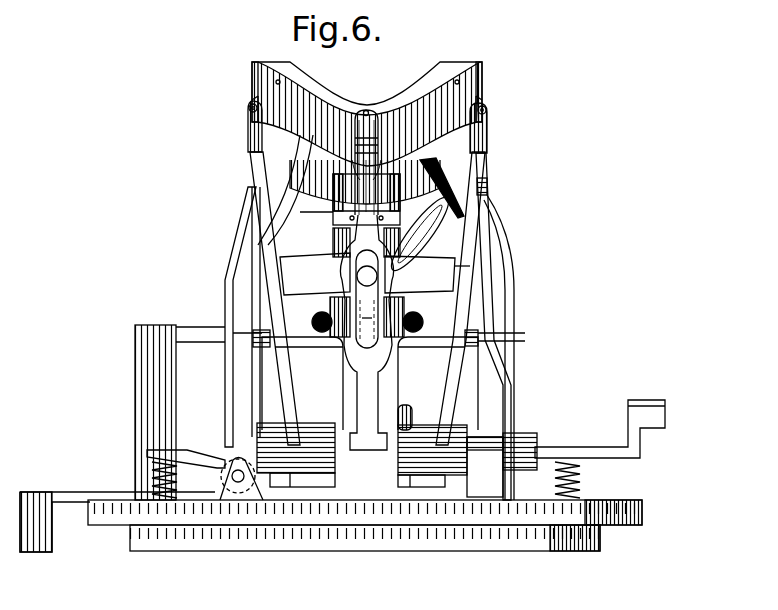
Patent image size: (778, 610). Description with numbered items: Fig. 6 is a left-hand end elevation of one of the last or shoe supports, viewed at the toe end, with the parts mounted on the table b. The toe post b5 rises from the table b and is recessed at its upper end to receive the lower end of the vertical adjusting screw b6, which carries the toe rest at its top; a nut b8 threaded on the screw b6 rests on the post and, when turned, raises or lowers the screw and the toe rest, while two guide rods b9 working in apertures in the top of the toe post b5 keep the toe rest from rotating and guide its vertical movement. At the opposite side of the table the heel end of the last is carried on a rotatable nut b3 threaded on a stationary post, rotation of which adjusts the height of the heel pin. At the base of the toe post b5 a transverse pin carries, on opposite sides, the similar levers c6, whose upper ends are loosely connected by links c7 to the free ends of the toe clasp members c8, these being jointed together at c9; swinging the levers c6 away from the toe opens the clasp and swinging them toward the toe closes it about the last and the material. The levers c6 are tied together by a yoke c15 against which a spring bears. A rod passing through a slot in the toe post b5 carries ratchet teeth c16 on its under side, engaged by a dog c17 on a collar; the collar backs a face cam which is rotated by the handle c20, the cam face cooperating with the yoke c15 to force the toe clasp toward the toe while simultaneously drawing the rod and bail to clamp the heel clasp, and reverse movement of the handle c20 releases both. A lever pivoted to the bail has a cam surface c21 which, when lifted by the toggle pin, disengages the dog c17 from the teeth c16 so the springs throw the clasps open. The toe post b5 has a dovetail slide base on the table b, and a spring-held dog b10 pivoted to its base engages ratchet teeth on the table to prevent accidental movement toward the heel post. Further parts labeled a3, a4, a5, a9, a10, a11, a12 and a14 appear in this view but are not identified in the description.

The toe clasp members c8 is at (318, 95).
The joint of the toe clasp members c9 is at (366, 110).
The links c7 is at (250, 104).
The levers c6 is at (248, 138).
The link bar a3 is at (240, 233).
The frame brace a4 is at (287, 194).
The vertical adjusting screw b6 is at (377, 207).
The guide rods b9 is at (345, 212).
The nut b8 is at (340, 235).
The handle c20 is at (424, 224).
The toe post b5 is at (367, 371).
The dog c17 is at (375, 303).
The ratchet teeth c16 is at (370, 276).
The yoke c15 is at (443, 267).
The rotatable nut b3 is at (313, 322).
The cam surface c21 is at (372, 317).
The cylinder a11 is at (302, 337).
The dog b10 is at (407, 410).
The column a12 is at (190, 328).
The frame arm a9 is at (190, 452).
The pivot a5 is at (237, 473).
The spring a10 is at (157, 478).
The bracket a14 is at (55, 497).
The table b is at (248, 512).